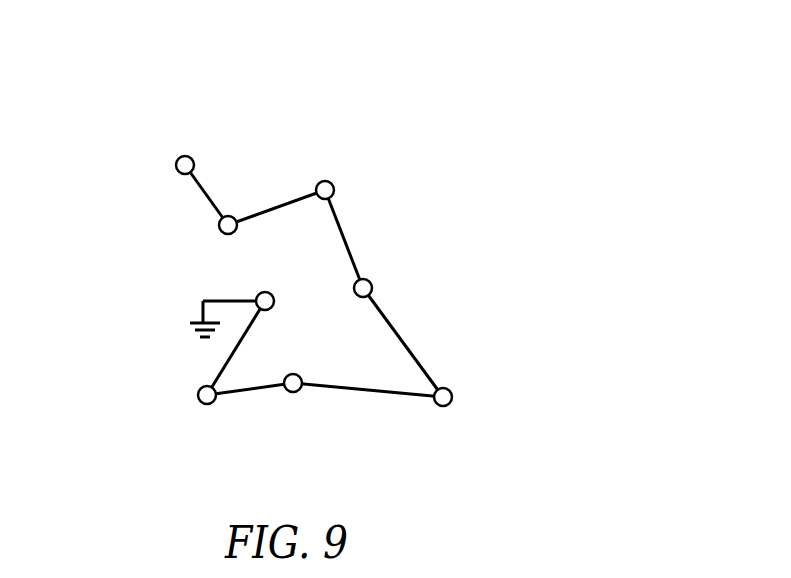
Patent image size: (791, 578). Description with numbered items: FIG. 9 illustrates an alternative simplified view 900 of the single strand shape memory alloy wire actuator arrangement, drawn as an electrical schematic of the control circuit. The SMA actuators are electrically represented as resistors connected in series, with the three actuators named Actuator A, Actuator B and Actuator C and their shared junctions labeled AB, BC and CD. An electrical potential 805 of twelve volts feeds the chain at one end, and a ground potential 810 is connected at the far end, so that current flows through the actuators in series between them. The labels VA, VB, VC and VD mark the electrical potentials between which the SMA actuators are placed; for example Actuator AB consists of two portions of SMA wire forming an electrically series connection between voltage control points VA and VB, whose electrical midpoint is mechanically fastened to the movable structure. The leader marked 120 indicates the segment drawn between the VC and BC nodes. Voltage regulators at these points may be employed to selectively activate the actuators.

The simplified view 900 is at (288, 287).
The electrical potential 805 is at (141, 140).
The ground potential 810 is at (170, 312).
The resistive element between VC and BC 120 is at (368, 436).